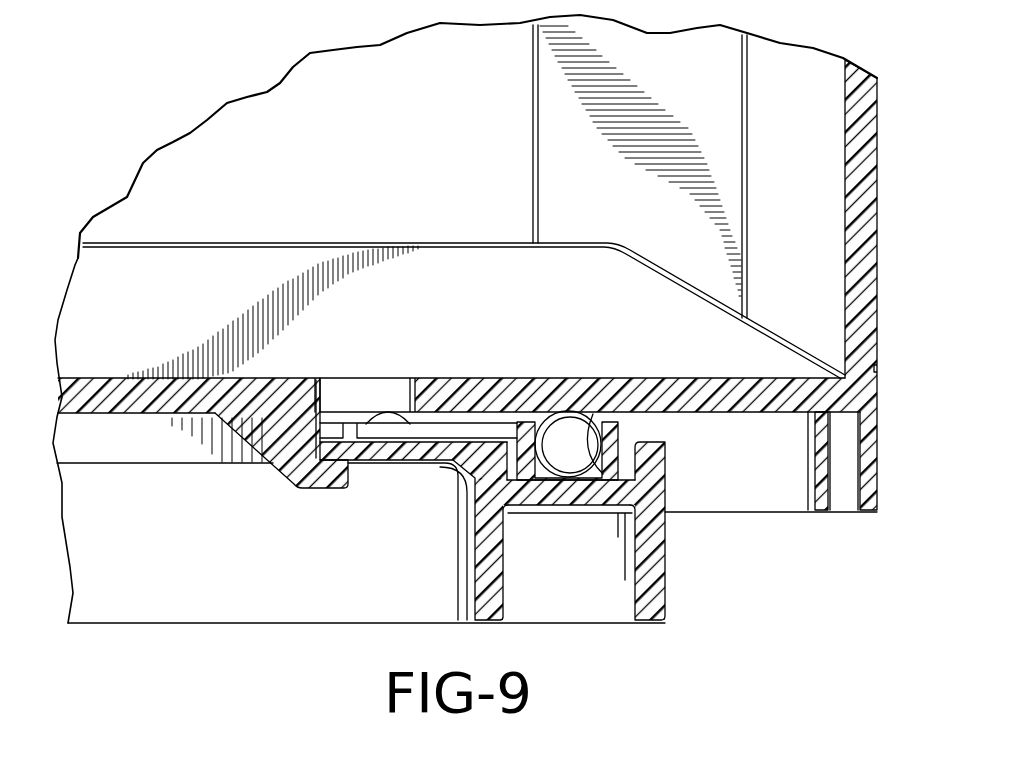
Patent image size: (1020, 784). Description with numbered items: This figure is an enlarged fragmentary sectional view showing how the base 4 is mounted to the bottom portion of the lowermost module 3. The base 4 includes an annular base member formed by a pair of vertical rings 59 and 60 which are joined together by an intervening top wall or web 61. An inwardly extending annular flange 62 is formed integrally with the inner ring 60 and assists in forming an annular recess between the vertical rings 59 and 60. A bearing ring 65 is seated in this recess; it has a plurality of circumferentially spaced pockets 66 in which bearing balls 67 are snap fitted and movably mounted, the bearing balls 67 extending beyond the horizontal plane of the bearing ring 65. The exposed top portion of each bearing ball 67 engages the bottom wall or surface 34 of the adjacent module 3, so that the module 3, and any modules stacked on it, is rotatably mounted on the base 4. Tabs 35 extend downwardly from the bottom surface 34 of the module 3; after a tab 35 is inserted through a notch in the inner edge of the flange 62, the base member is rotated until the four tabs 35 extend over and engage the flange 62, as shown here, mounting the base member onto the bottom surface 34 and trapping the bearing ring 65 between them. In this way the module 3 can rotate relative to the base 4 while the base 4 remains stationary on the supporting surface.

The module 3 is at (783, 48).
The base 4 is at (677, 608).
The bottom wall or surface 34 is at (128, 413).
The tab 35 is at (318, 490).
The vertical ring 59 is at (668, 563).
The inner ring 60 is at (480, 572).
The top wall or web 61 is at (565, 500).
The annular flange 62 is at (398, 452).
The bearing ring 65 is at (507, 431).
The pocket 66 is at (596, 468).
The bearing ball 67 is at (389, 418).